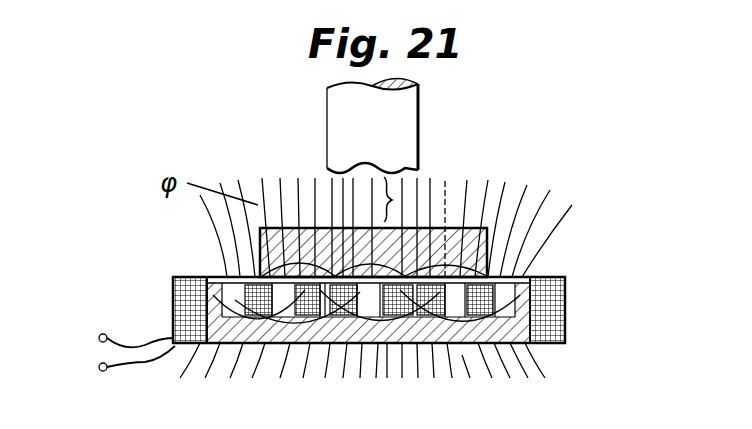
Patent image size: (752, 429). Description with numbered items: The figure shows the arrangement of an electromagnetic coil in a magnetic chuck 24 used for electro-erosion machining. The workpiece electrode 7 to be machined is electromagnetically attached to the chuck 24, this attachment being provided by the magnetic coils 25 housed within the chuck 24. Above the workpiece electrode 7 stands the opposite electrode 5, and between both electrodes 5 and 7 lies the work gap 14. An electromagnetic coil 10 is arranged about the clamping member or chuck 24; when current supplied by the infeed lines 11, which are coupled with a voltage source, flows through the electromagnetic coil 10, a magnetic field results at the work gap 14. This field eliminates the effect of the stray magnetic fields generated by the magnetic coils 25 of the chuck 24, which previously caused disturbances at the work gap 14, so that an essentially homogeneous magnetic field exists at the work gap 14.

The electrode 5 is at (481, 111).
The work gap 14 is at (396, 200).
The workpiece electrode 7 is at (470, 253).
The magnetic chuck 24 is at (624, 289).
The electromagnetic coil 10 is at (186, 302).
The infeed lines 11 is at (99, 366).
The magnetic coils 25 is at (370, 273).